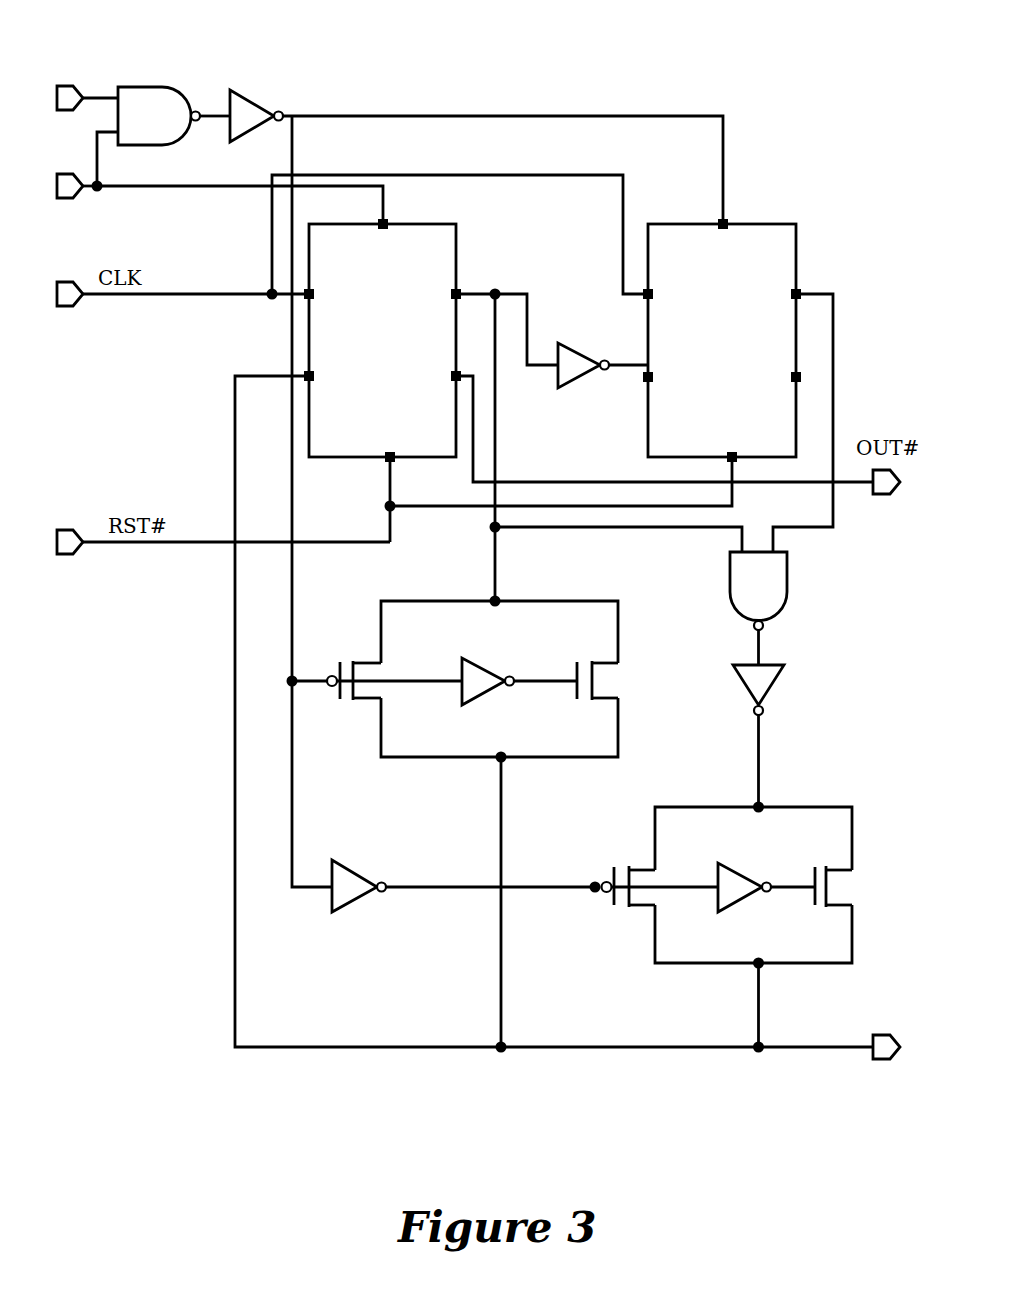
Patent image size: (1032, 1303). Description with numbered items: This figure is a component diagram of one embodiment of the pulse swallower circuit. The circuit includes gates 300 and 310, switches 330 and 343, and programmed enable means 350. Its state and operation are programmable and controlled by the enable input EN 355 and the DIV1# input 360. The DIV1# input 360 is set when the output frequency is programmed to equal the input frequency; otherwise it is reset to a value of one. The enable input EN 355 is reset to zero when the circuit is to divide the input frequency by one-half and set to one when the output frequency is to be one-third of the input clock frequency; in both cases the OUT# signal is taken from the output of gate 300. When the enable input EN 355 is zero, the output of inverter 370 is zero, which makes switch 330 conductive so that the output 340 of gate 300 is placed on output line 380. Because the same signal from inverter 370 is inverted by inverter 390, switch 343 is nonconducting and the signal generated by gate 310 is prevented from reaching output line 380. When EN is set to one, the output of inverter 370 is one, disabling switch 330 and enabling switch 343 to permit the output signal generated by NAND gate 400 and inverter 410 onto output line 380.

The gate 300 is at (451, 258).
The gate 310 is at (787, 264).
The switch 330 is at (537, 606).
The output of gate 300 340 is at (458, 291).
The switch 343 is at (810, 806).
The programmed enable means 350 is at (190, 101).
The enable input EN 355 is at (74, 87).
The DIV1# input 360 is at (73, 202).
The inverter 370 is at (273, 103).
The output line 380 is at (587, 1049).
The inverter 390 is at (343, 893).
The NAND gate 400 is at (768, 570).
The inverter 410 is at (766, 677).